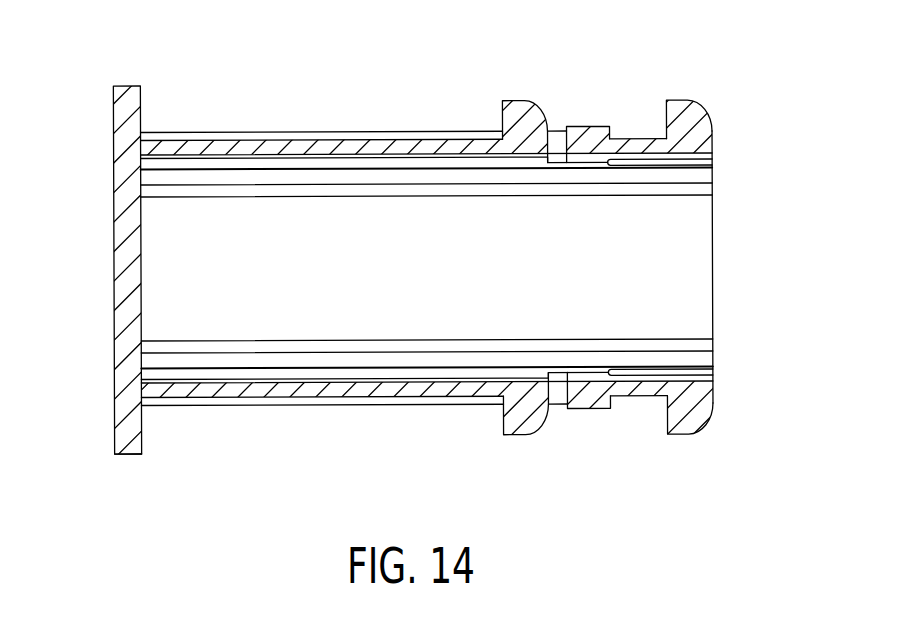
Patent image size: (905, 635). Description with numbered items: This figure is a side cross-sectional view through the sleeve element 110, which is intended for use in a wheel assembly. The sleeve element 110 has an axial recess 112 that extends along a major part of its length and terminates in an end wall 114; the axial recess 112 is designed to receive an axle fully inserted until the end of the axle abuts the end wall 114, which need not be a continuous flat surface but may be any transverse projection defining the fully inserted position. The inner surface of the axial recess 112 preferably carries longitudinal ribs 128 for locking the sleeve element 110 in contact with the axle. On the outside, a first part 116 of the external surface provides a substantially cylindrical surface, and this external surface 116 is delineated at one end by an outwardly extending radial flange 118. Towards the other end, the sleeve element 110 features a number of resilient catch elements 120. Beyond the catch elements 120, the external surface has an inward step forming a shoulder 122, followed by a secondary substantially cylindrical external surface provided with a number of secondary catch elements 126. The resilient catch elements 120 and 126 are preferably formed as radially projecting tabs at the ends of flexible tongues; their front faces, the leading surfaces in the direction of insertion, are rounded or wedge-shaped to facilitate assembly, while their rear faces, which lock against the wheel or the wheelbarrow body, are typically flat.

The sleeve element 110 is at (728, 101).
The axial recess 112 is at (687, 272).
The end wall 114 is at (115, 292).
The first part of the external surface 116 is at (295, 405).
The radial flange 118 is at (129, 437).
The resilient catch elements 120 is at (524, 415).
The shoulder 122 is at (613, 400).
The secondary catch elements 126 is at (697, 415).
The longitudinal ribs 128 is at (705, 190).